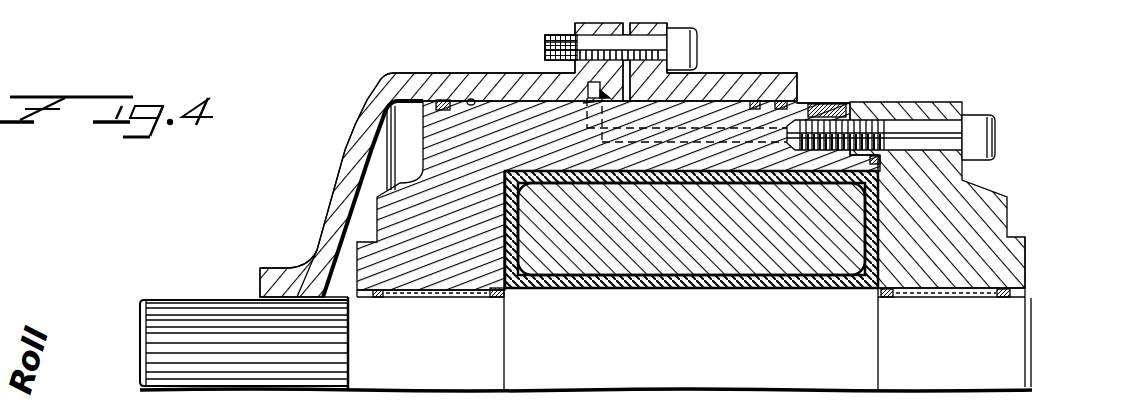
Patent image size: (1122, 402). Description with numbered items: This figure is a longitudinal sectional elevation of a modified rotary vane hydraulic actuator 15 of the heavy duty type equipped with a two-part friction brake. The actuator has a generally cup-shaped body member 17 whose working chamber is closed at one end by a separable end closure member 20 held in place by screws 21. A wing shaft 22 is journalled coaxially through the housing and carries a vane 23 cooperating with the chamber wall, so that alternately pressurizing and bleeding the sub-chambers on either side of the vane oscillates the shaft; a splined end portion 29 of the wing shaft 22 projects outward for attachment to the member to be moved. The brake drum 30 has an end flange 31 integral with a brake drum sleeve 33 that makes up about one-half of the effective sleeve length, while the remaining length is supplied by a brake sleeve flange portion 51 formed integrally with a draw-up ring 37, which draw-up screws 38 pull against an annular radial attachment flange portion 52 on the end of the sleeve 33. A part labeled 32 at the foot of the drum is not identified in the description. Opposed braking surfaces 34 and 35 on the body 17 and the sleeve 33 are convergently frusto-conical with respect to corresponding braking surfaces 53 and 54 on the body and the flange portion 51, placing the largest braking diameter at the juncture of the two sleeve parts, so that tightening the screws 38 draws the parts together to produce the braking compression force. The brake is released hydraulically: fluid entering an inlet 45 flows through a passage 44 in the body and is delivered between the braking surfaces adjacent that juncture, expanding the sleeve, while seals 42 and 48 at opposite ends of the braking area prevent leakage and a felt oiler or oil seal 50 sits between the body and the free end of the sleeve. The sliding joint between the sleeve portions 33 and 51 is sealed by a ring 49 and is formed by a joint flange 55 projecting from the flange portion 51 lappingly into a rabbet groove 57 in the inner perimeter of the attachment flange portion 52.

The rotary vane hydraulic actuator 15 is at (881, 81).
The body member 17 is at (441, 143).
The end closure member 20 is at (972, 195).
The screws 21 is at (982, 128).
The wing shaft 22 is at (745, 343).
The vane 23 is at (813, 255).
The splined end portion 29 is at (197, 307).
The brake drum 30 is at (528, 151).
The end flange 31 is at (343, 175).
The foot block 32 is at (272, 270).
The brake drum sleeve 33 is at (482, 80).
The braking surface 34 is at (507, 99).
The braking surface 35 is at (469, 98).
The draw-up ring 37 is at (643, 38).
The draw-up screws 38 is at (700, 43).
The seal 42 is at (782, 98).
The hydraulic pressure passage 44 is at (598, 141).
The inlet 45 is at (923, 112).
The seal 48 is at (441, 97).
The static O-ring seal 49 is at (562, 60).
The felt oiler 50 is at (804, 103).
The brake sleeve flange portion 51 is at (758, 93).
The attachment flange portion 52 is at (588, 26).
The braking surface 53 is at (698, 100).
The braking surface 54 is at (709, 90).
The joint flange 55 is at (583, 103).
The rabbet groove 57 is at (592, 86).